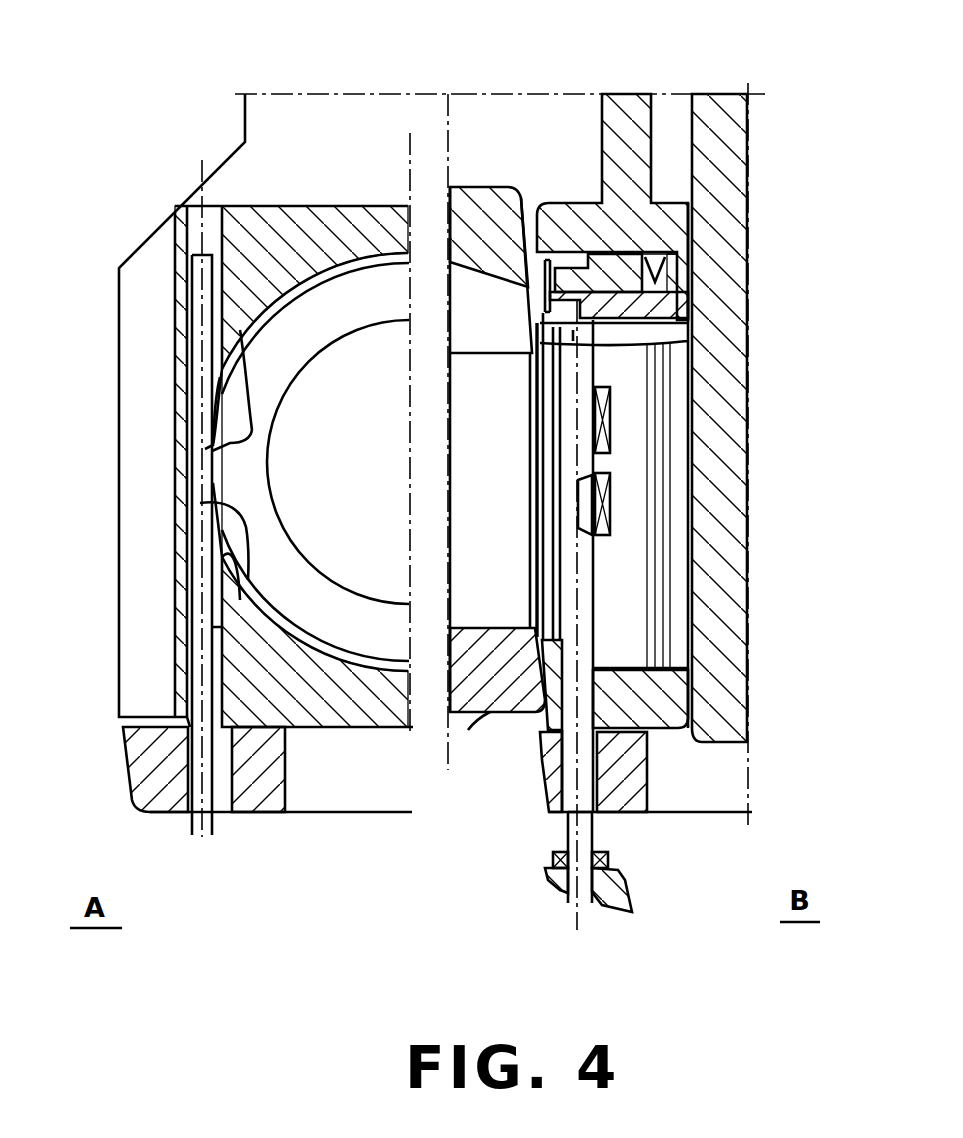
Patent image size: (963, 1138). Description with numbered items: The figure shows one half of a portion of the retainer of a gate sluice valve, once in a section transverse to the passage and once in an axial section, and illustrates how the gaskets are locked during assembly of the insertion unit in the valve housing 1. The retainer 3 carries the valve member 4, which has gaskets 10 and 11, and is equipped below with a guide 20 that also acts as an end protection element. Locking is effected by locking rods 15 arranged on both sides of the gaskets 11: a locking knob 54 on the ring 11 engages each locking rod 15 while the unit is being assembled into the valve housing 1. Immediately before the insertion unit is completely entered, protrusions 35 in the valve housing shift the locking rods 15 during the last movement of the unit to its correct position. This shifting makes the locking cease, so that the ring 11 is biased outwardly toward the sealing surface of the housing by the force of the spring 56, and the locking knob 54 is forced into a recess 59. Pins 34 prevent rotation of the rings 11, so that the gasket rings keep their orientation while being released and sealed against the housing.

In FIG. 4B, the valve housing 1 is at (495, 197).
In FIG. 4A, the retainer 3 is at (348, 224).
In FIG. 4B, the retainer 3 is at (625, 108).
In FIG. 4B, the valve member 4 is at (717, 100).
In FIG. 4B, the gasket 10 is at (622, 300).
In FIG. 4B, the gasket 11 is at (648, 268).
In FIG. 4A, the locking rod 15 is at (200, 770).
In FIG. 4B, the locking rod 15 is at (585, 562).
In FIG. 4A, the guide 20 is at (272, 780).
In FIG. 4B, the pin 34 is at (555, 255).
In FIG. 4B, the protrusion 35 is at (585, 835).
In FIG. 4A, the locking knob 54 is at (252, 430).
In FIG. 4B, the locking knob 54 is at (603, 460).
In FIG. 4B, the spring 56 is at (668, 268).
In FIG. 4A, the recess 59 is at (248, 560).
In FIG. 4B, the recess 59 is at (583, 505).